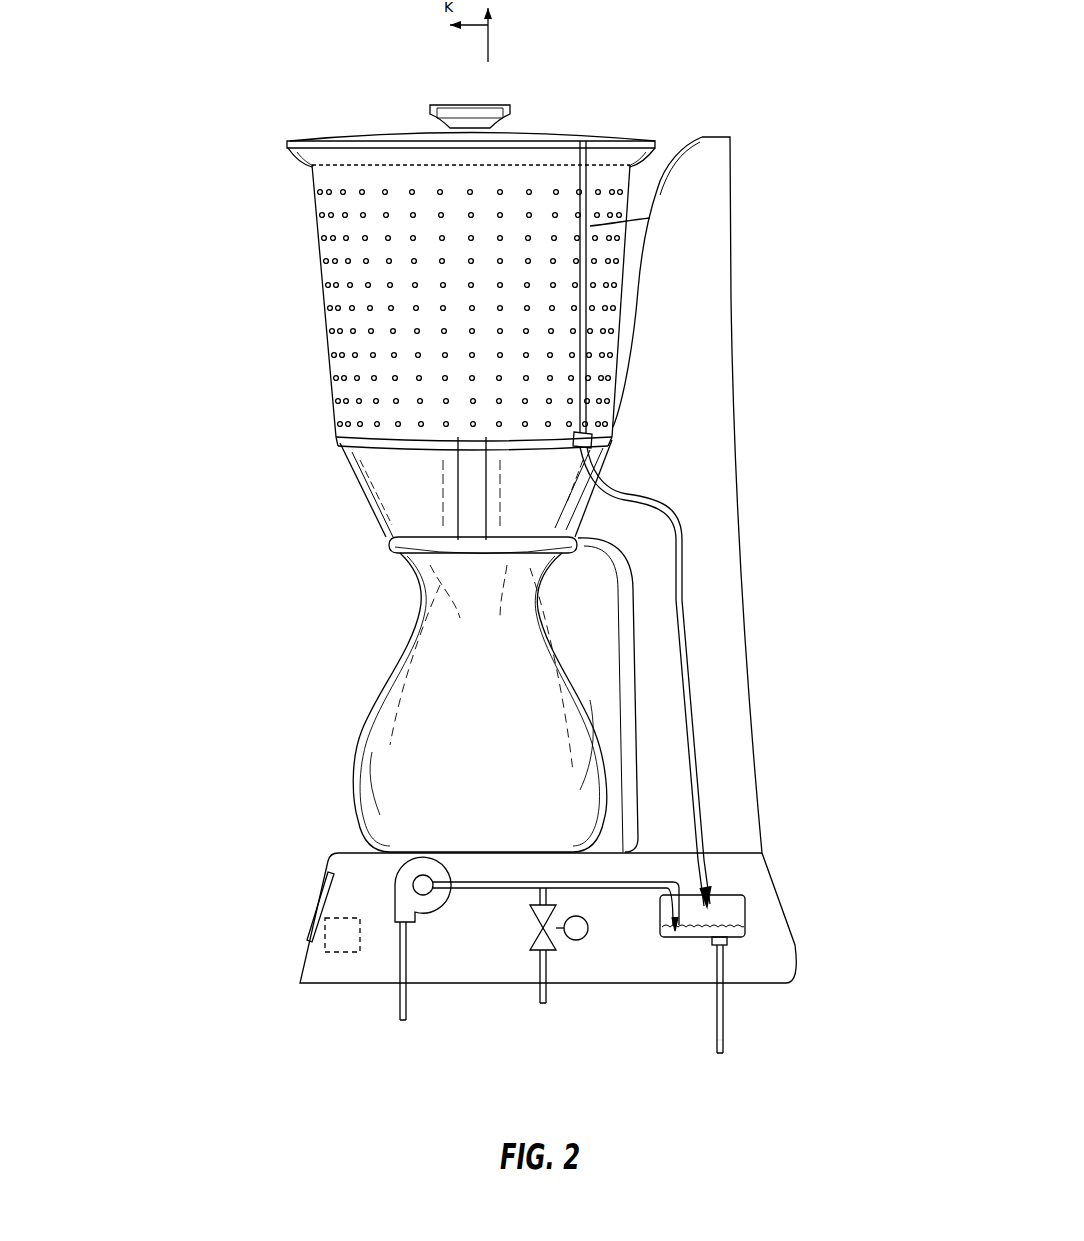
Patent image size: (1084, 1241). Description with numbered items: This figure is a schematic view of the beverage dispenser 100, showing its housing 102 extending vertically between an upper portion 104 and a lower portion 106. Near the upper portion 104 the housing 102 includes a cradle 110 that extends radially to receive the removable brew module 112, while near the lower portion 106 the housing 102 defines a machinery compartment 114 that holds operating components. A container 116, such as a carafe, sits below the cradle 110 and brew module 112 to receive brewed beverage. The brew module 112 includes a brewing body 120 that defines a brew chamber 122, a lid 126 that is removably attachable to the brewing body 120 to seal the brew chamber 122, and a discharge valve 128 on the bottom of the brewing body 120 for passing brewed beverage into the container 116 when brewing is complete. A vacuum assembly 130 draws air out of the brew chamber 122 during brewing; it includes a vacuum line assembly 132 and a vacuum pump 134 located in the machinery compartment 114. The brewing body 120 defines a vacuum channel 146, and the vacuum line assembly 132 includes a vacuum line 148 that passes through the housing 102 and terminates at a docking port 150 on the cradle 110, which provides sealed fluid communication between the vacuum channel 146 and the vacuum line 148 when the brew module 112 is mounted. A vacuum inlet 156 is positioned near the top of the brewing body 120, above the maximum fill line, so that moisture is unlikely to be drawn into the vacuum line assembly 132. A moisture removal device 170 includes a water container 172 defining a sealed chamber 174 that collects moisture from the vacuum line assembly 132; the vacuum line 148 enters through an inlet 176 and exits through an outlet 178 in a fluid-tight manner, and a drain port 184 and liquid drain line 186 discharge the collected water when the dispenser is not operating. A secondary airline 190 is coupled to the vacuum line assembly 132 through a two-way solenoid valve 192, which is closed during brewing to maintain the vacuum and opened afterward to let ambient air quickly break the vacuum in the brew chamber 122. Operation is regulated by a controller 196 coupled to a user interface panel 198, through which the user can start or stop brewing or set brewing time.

The beverage dispenser 100 is at (155, 114).
The housing 102 is at (737, 310).
The upper portion 104 is at (730, 511).
The lower portion 106 is at (347, 992).
The cradle 110 is at (413, 351).
The brew module 112 is at (413, 307).
The machinery compartment 114 is at (302, 971).
The container 116 is at (380, 680).
The brewing body 120 is at (312, 203).
The brew chamber 122 is at (466, 232).
The lid 126 is at (368, 132).
The discharge valve 128 is at (462, 487).
The vacuum assembly 130 is at (418, 1028).
The vacuum line assembly 132 is at (744, 874).
The vacuum pump 134 is at (394, 921).
The vacuum channel 146 is at (650, 218).
The vacuum line 148 is at (688, 662).
The docking port 150 is at (596, 440).
The vacuum inlet 156 is at (583, 132).
The moisture removal device 170 is at (765, 946).
The water container 172 is at (720, 911).
The sealed chamber 174 is at (697, 943).
The inlet 176 is at (746, 928).
The outlet 178 is at (674, 924).
The drain port 184 is at (728, 951).
The liquid drain line 186 is at (730, 1042).
The secondary airline 190 is at (538, 1000).
The two-way solenoid valve 192 is at (567, 940).
The controller 196 is at (322, 935).
The user interface panel 198 is at (318, 906).